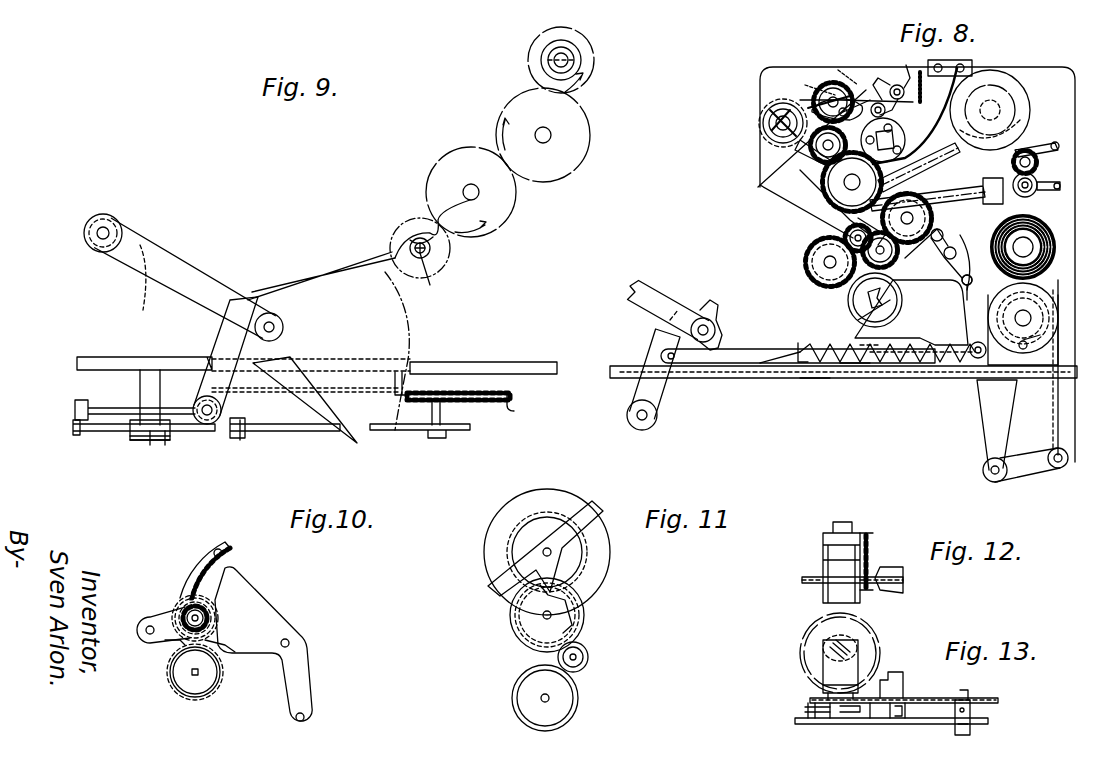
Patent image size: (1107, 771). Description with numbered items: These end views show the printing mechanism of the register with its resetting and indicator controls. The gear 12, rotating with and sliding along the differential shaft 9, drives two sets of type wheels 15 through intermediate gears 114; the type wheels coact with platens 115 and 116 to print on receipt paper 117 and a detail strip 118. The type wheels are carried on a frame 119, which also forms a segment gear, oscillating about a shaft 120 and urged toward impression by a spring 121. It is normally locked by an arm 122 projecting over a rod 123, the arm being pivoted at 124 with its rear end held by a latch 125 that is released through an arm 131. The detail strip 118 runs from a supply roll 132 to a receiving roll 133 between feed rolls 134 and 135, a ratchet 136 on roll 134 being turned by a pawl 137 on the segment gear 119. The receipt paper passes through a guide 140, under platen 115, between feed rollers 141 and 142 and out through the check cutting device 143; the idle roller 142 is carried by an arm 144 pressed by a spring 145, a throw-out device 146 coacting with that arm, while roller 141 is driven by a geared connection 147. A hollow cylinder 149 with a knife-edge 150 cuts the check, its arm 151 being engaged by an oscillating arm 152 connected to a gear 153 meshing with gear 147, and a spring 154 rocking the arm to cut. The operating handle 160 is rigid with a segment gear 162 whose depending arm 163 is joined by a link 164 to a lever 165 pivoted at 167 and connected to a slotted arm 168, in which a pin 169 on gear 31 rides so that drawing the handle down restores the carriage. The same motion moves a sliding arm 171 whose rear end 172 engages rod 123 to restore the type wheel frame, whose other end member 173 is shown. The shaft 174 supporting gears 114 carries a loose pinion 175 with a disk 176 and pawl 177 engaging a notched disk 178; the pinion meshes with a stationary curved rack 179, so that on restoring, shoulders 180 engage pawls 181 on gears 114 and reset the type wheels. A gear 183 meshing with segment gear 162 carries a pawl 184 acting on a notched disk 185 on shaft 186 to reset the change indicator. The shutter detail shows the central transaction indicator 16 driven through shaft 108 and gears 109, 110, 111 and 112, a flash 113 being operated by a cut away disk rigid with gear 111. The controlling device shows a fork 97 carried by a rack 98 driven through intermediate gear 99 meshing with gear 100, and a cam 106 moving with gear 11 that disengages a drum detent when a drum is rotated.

In FIG. 8, the differential shaft 9 is at (875, 300).
In FIG. 12, the gear 11 is at (802, 580).
In FIG. 13, the gear 11 is at (803, 665).
In FIG. 8, the gear 12 is at (870, 300).
In FIG. 10, the gear 12 is at (172, 682).
In FIG. 8, the type wheels 15 is at (935, 220).
In FIG. 11, the central transaction indicator 16 is at (485, 553).
In FIG. 9, the gear 31 is at (520, 409).
In FIG. 12, the fork 97 is at (862, 530).
In FIG. 13, the fork 97 is at (870, 650).
In FIG. 12, the rack 98 is at (874, 560).
In FIG. 13, the intermediate gear 99 is at (906, 700).
In FIG. 13, the gear 100 is at (988, 718).
In FIG. 12, the cam 106 is at (895, 593).
In FIG. 13, the cam 106 is at (905, 680).
In FIG. 11, the shaft 108 is at (552, 698).
In FIG. 11, the gear 109 is at (575, 715).
In FIG. 11, the gear 110 is at (590, 657).
In FIG. 11, the gear 111 is at (585, 618).
In FIG. 11, the gear 112 is at (580, 565).
In FIG. 11, the flash 113 is at (608, 530).
In FIG. 8, the intermediate gear 114 is at (845, 236).
In FIG. 10, the intermediate gear 114 is at (215, 610).
In FIG. 11, the intermediate gear 114 is at (525, 628).
In FIG. 8, the platen 115 is at (895, 140).
In FIG. 8, the platen 116 is at (1065, 200).
In FIG. 8, the receipt paper 117 is at (945, 60).
In FIG. 8, the detail strip 118 is at (938, 259).
In FIG. 8, the frame 119 is at (940, 288).
In FIG. 8, the shaft 120 is at (979, 298).
In FIG. 10, the shaft 120 is at (290, 643).
In FIG. 8, the spring 121 is at (830, 365).
In FIG. 8, the arm 122 is at (1010, 385).
In FIG. 8, the rod 123 is at (970, 358).
In FIG. 8, the pivot 124 is at (1030, 342).
In FIG. 8, the latch 125 is at (1060, 412).
In FIG. 8, the arm 131 is at (1048, 468).
In FIG. 8, the supply roll 132 is at (1056, 247).
In FIG. 8, the receiving roll 133 is at (1040, 300).
In FIG. 8, the feed roll 134 is at (1058, 150).
In FIG. 8, the feed roll 135 is at (1060, 184).
In FIG. 8, the ratchet 136 is at (1010, 163).
In FIG. 8, the pawl 137 is at (940, 165).
In FIG. 8, the guide 140 is at (968, 70).
In FIG. 8, the feed roller 141 is at (810, 155).
In FIG. 8, the idle feed roller 142 is at (800, 150).
In FIG. 8, the check cutting device 143 is at (765, 118).
In FIG. 8, the arm 144 is at (860, 100).
In FIG. 8, the spring 145 is at (898, 85).
In FIG. 8, the throw-out device 146 is at (880, 102).
In FIG. 8, the geared connection 147 is at (803, 213).
In FIG. 8, the oscillating hollow cylinder 149 is at (775, 140).
In FIG. 8, the knife-edge 150 is at (770, 165).
In FIG. 8, the arm 151 is at (800, 100).
In FIG. 8, the oscillating arm 152 is at (828, 92).
In FIG. 8, the gear 153 is at (828, 85).
In FIG. 8, the spring 154 is at (852, 182).
In FIG. 9, the operating handle 160 is at (113, 233).
In FIG. 9, the segment gear 162 is at (410, 335).
In FIG. 8, the segment gear 162 is at (695, 300).
In FIG. 9, the depending arm 163 is at (210, 362).
In FIG. 8, the depending arm 163 is at (675, 395).
In FIG. 9, the link 164 is at (136, 408).
In FIG. 9, the lever 165 is at (110, 431).
In FIG. 9, the pivot 167 is at (165, 440).
In FIG. 9, the slotted arm 168 is at (283, 431).
In FIG. 9, the pin 169 is at (440, 406).
In FIG. 8, the sliding arm 171 is at (760, 350).
In FIG. 8, the rear end 172 is at (906, 345).
In FIG. 10, the end member 173 is at (270, 620).
In FIG. 10, the shaft 174 is at (210, 618).
In FIG. 10, the pinion 175 is at (170, 645).
In FIG. 10, the disk 176 is at (205, 608).
In FIG. 10, the pawl 177 is at (182, 612).
In FIG. 10, the notched disk 178 is at (222, 648).
In FIG. 10, the stationary curved rack 179 is at (230, 556).
In FIG. 8, the shoulders 180 is at (884, 253).
In FIG. 8, the pawls 181 is at (855, 225).
In FIG. 9, the gear 183 is at (395, 254).
In FIG. 9, the pawl 184 is at (425, 215).
In FIG. 9, the notched disk 185 is at (432, 252).
In FIG. 9, the shaft 186 is at (439, 277).